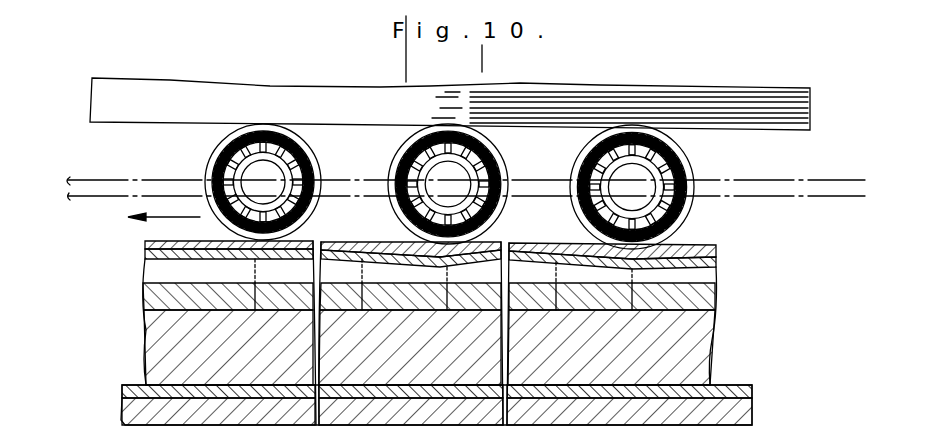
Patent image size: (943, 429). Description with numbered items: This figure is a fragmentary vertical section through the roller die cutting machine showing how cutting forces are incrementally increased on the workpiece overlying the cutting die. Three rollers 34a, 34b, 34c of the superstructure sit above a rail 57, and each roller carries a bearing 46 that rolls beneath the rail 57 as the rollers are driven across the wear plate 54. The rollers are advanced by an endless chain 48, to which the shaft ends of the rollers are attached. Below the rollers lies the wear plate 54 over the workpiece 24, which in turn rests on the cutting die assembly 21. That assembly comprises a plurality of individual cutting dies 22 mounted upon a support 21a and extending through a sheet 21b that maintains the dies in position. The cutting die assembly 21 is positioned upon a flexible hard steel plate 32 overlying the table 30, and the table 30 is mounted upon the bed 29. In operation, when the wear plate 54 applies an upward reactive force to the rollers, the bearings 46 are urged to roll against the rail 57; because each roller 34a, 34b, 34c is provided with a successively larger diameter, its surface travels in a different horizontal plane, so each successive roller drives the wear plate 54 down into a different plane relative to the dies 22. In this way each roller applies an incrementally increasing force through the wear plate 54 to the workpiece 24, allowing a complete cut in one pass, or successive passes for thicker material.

The rail 57 is at (806, 89).
The endless chain 48 is at (849, 167).
The bearing 46 is at (393, 162).
The roller 34a is at (300, 130).
The roller 34b is at (506, 171).
The roller 34c is at (683, 150).
The wear plate 54 is at (720, 248).
The workpiece 24 is at (720, 266).
The cutting die 22 is at (253, 272).
The sheet 21b is at (150, 298).
The support 21a is at (148, 350).
The cutting die assembly 21 is at (724, 345).
The flexible hard steel plate 32 is at (752, 388).
The table 30 is at (752, 415).
The bed 29 is at (836, 400).